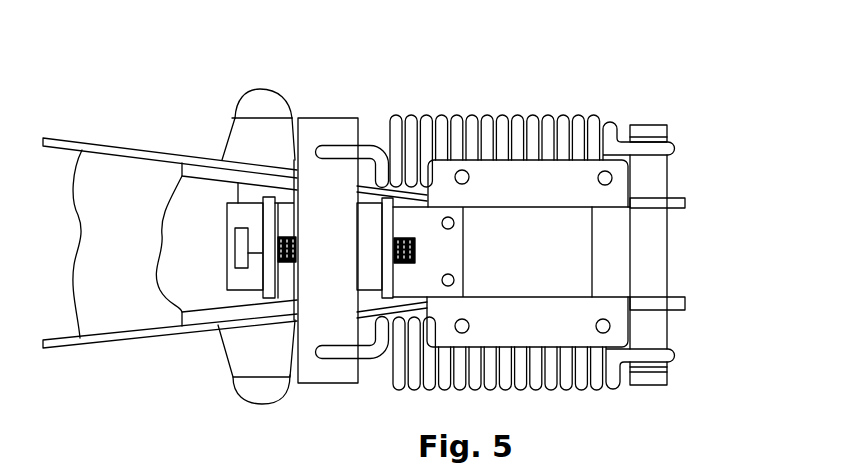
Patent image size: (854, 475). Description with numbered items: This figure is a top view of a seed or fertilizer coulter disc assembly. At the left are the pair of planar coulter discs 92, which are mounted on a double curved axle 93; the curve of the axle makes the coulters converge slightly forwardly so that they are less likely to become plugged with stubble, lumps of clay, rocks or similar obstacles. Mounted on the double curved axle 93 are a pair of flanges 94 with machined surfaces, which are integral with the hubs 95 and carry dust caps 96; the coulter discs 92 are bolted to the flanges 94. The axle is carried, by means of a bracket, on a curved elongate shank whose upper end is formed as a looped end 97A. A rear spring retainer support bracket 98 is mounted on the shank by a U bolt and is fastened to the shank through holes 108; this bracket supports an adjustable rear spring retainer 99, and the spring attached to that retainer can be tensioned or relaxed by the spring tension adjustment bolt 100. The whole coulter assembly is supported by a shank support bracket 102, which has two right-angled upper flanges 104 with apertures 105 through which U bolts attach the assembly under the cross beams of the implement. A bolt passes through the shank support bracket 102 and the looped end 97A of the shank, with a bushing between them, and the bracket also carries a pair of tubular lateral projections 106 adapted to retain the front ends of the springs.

The planar coulter discs 92 is at (76, 247).
The double curved axle 93 is at (246, 146).
The flanges 94 is at (150, 246).
The hubs 95 is at (245, 347).
The dust caps 96 is at (267, 393).
The looped end 97A is at (600, 243).
The rear spring retainer support bracket 98 is at (393, 187).
The adjustable rear spring retainer 99 is at (337, 123).
The spring tension adjustment bolt 100 is at (228, 243).
The shank support bracket 102 is at (545, 322).
The right-angled upper flanges 104 is at (567, 183).
The apertures 105 is at (612, 181).
The tubular lateral projections 106 is at (667, 328).
The holes 108 is at (450, 220).